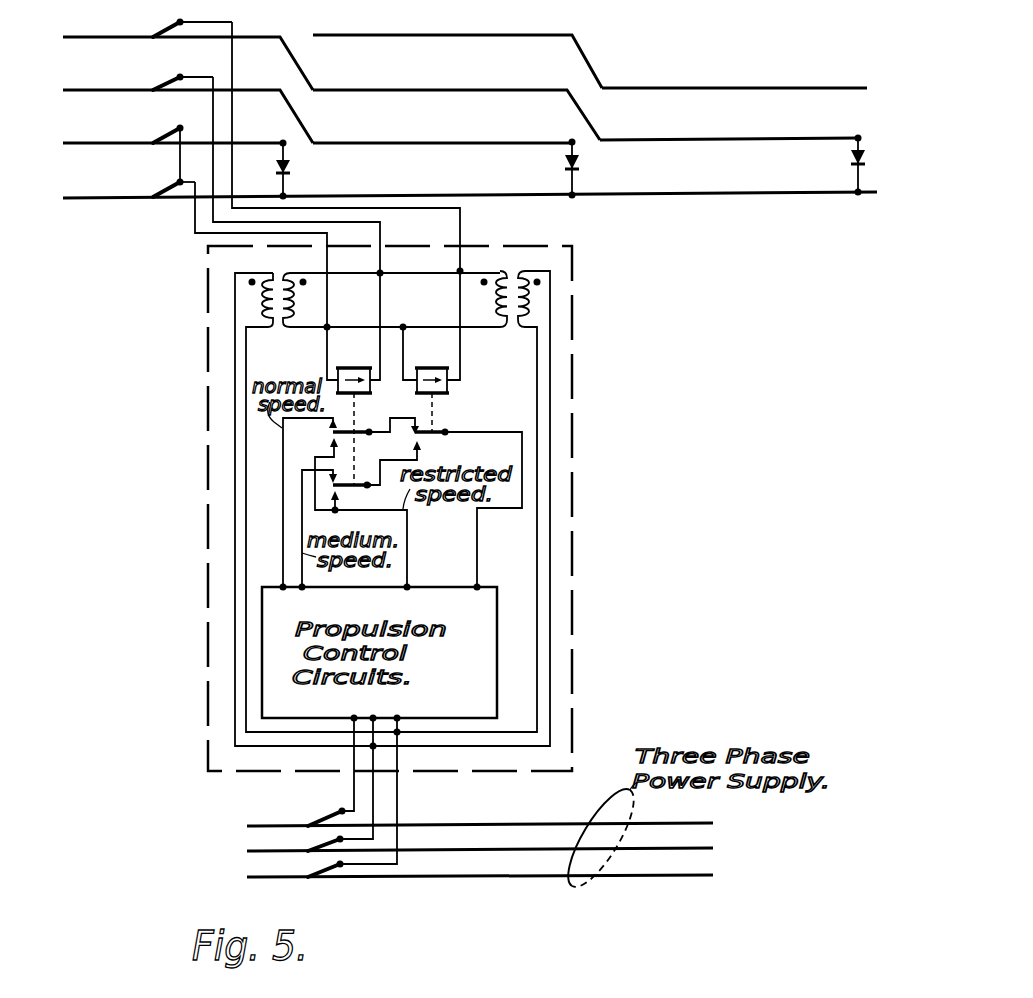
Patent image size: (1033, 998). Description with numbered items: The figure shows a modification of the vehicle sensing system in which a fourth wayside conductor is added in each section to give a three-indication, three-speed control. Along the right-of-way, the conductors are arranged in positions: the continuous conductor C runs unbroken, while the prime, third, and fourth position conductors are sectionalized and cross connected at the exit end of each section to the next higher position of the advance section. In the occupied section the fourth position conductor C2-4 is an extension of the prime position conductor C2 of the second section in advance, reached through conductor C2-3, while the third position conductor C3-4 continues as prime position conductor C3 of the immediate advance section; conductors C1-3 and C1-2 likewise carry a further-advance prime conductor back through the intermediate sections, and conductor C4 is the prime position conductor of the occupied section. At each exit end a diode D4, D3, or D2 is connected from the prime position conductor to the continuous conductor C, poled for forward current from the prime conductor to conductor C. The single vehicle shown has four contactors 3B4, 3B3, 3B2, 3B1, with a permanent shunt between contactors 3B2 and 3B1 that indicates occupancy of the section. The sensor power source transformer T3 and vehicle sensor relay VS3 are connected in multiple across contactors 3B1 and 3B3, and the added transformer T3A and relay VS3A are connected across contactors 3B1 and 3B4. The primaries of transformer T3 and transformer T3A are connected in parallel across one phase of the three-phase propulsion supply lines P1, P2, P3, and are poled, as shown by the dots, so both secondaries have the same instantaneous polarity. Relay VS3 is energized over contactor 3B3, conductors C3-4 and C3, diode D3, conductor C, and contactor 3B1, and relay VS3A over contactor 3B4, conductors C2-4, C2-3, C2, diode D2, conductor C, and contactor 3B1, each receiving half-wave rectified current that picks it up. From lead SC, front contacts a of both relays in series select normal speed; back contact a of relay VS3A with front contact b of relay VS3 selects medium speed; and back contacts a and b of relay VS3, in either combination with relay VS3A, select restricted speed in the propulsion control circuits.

The fourth contactor 3B4 is at (168, 29).
The contactor 3B3 is at (168, 82).
The contactor 3B2 is at (168, 135).
The contactor 3B1 is at (168, 189).
The fourth position conductor C2-4 is at (282, 28).
The third position conductor C3-4 is at (278, 83).
The conductor segment C4 is at (272, 134).
The conductor segment C1-3 is at (531, 35).
The conductor C2-3 is at (534, 90).
The conductor C3 is at (519, 140).
The conductor segment C1-2 is at (822, 77).
The conductor C2 is at (834, 138).
The continuous conductor C is at (513, 194).
The diode D4 is at (293, 169).
The diode D3 is at (580, 170).
The diode D2 is at (852, 162).
The sensor power source transformer T3 is at (281, 270).
The second sensor power source transformer T3A is at (512, 268).
The vehicle sensor relay VS3 is at (351, 413).
The second vehicle sensor relay VS3A is at (427, 387).
The contact a is at (363, 431).
The contact b is at (356, 483).
The lead SC is at (498, 430).
The power supply phase line P1 is at (496, 809).
The power supply phase line P2 is at (503, 840).
The power supply phase line P3 is at (503, 865).